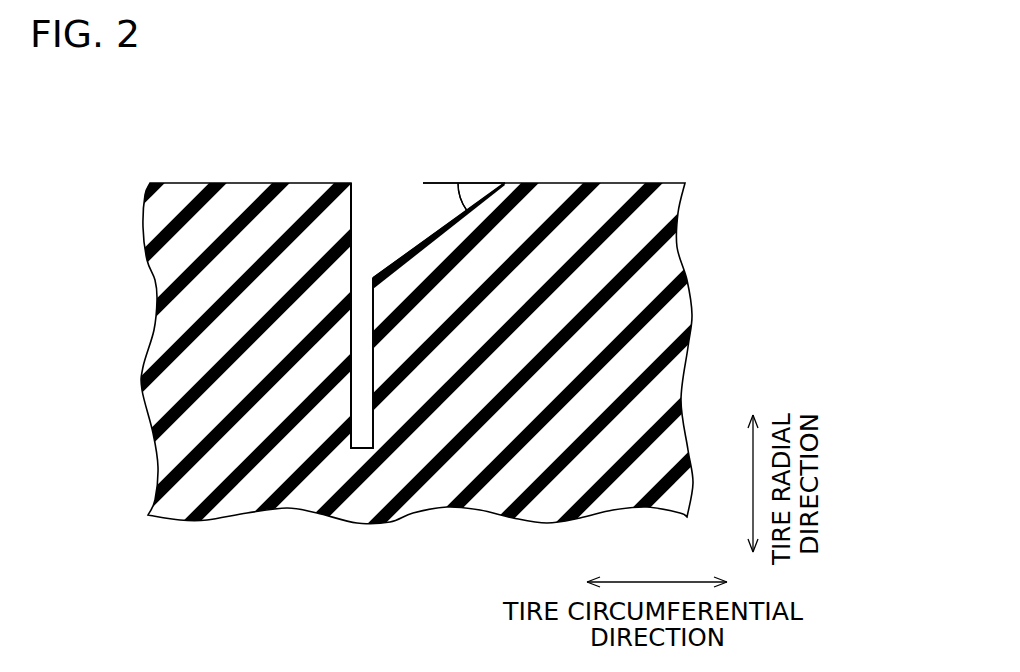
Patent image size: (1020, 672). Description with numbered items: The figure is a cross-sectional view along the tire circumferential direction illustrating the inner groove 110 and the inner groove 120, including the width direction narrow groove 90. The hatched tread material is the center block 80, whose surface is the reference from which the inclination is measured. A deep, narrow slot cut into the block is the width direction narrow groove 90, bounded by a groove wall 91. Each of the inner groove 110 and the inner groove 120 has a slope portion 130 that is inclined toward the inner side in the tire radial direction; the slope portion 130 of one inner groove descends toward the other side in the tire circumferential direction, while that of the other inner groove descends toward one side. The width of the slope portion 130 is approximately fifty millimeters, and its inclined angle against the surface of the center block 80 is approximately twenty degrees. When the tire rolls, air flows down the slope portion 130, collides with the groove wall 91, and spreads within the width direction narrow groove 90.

The center block 80 is at (202, 183).
The width direction narrow groove 90 is at (360, 350).
The groove wall 91 is at (357, 210).
The inner groove 110 is at (477, 176).
The inner groove 120 is at (477, 176).
The slope portion 130 is at (430, 234).